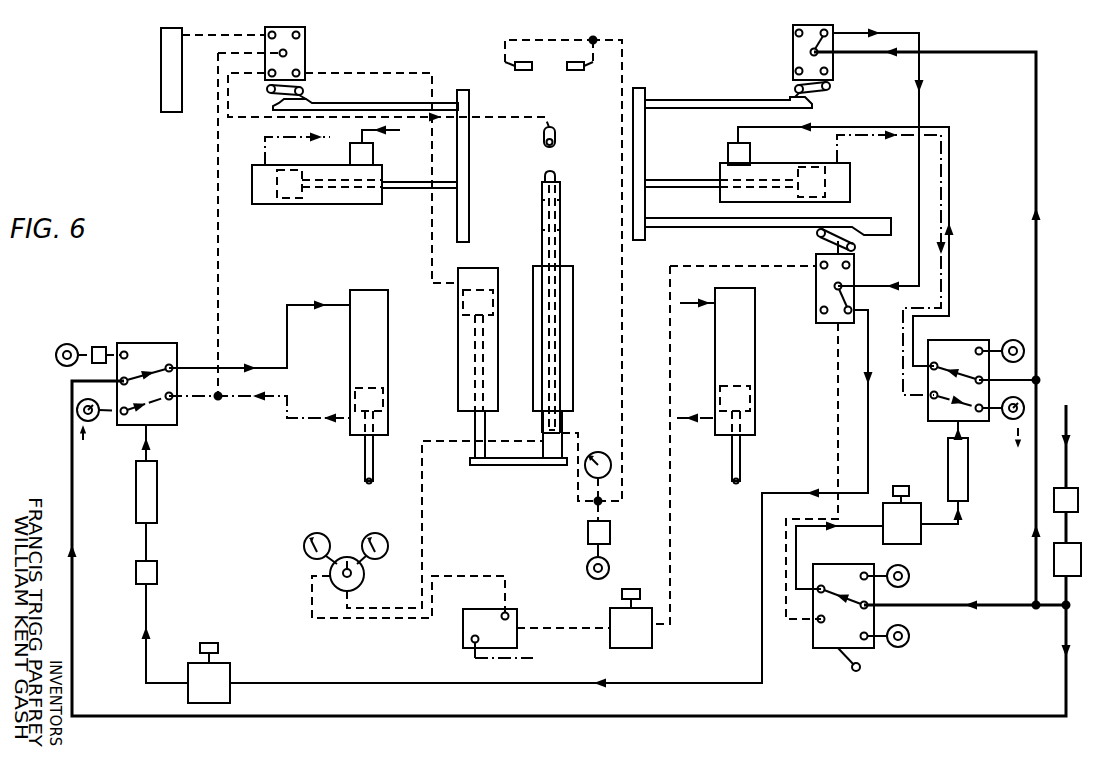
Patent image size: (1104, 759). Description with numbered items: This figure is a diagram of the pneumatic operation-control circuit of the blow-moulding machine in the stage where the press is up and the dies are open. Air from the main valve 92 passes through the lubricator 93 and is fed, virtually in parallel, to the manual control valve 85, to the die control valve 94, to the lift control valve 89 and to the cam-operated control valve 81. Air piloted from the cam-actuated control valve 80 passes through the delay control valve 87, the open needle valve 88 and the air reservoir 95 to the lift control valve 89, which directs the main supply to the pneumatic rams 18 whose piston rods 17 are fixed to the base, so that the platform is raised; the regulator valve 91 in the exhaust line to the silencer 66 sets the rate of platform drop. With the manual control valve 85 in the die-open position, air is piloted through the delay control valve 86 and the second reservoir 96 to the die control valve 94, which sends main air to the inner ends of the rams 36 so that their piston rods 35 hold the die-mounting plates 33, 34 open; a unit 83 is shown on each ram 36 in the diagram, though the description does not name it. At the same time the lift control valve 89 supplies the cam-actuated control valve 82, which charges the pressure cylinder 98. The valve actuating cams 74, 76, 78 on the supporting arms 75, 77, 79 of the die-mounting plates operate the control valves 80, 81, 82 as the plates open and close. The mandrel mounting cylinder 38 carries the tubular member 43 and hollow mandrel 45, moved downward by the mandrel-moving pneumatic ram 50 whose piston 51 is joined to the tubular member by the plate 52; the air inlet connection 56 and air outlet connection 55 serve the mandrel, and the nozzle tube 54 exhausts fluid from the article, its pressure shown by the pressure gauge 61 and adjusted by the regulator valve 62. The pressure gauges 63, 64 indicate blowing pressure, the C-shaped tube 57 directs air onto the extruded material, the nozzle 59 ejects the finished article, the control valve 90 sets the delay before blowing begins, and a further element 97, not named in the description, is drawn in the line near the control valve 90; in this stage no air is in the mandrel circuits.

The piston rods 17 is at (366, 461).
The pneumatic rams 18 is at (385, 360).
The die-mounting plate 33 is at (470, 163).
The die-mounting plate 34 is at (646, 151).
The piston rods 35 is at (413, 173).
The pneumatic rams 36 is at (325, 203).
The mandrel mounting cylinder 38 is at (574, 356).
The tubular member 43 is at (562, 418).
The hollow mandrel 45 is at (561, 212).
The mandrel-moving pneumatic ram 50 is at (463, 360).
The piston 51 is at (475, 452).
The plate 52 is at (512, 465).
The nozzle tube 54 is at (556, 175).
The air outlet connection 55 is at (561, 432).
The air inlet connection 56 is at (543, 440).
The C-shaped tube 57 is at (566, 70).
The nozzle 59 is at (556, 134).
The pressure gauge 61 is at (599, 452).
The regulator valve 62 is at (611, 538).
The pressure gauge 63 is at (317, 533).
The pressure gauge 64 is at (375, 533).
The silencer 66 is at (68, 344).
The valve actuating cam 74 is at (888, 236).
The supporting arm 75 is at (740, 228).
The valve actuating cam 76 is at (815, 100).
The supporting arm 77 is at (752, 100).
The valve actuating cam 78 is at (273, 105).
The supporting arm 79 is at (395, 102).
The control valve 80 is at (822, 283).
The control valve 81 is at (793, 50).
The control valve 82 is at (306, 53).
The solenoid valve 83 is at (373, 152).
The manual control valve 85 is at (833, 633).
The control valve 86 is at (921, 536).
The control valve 87 is at (230, 669).
The needle valve 88 is at (157, 571).
The valve 89 is at (143, 343).
The control valve 90 is at (652, 636).
The valve 91 is at (100, 347).
The main valve 92 is at (1069, 490).
The lubricator 93 is at (1068, 553).
The valve 94 is at (969, 340).
The air reservoir 95 is at (157, 496).
The reservoir 96 is at (968, 473).
The pressure switch 97 is at (515, 615).
The pressure cylinder 98 is at (168, 66).